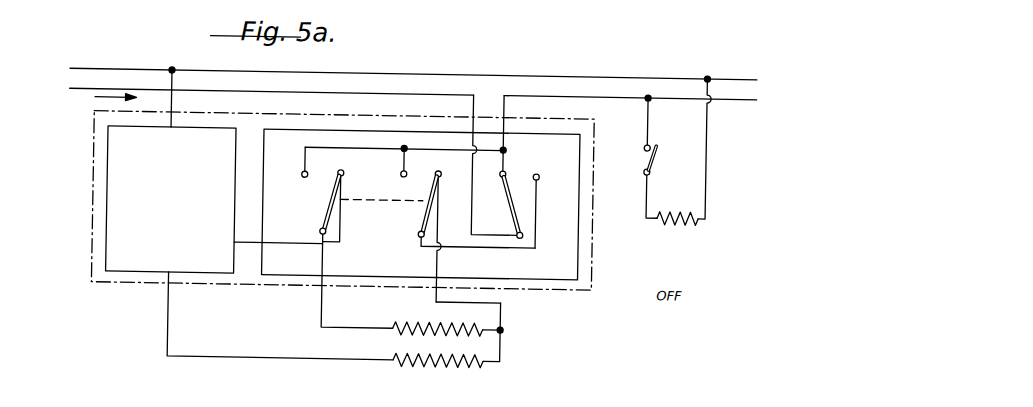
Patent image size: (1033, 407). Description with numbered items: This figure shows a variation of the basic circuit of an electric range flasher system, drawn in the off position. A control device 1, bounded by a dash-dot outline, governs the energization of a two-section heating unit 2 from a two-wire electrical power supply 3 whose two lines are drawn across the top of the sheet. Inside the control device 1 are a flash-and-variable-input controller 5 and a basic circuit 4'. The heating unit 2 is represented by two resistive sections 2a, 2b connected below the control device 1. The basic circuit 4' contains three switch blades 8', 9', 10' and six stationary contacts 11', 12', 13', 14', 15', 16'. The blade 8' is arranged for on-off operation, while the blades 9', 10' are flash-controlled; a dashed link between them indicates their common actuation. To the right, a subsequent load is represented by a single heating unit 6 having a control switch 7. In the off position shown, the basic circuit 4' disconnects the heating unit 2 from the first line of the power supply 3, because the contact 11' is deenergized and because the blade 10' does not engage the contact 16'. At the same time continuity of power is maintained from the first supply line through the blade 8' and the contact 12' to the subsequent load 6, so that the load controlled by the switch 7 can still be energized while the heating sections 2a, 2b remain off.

The control device 1 is at (95, 199).
The two-section heating unit 2 is at (461, 348).
The load resistor 2a is at (440, 321).
The load resistor 2b is at (440, 373).
The two-wire electrical power supply 3 is at (61, 55).
The basic circuit 4' is at (420, 216).
The flash-and-variable-input controller 5 is at (179, 153).
The heating unit 6 is at (677, 219).
The control switch 7 is at (660, 150).
The switch blade 8' is at (486, 207).
The switch blade 9' is at (461, 212).
The switch blade 10' is at (313, 204).
The stationary contact 11' is at (549, 202).
The stationary contact 12' is at (493, 166).
The stationary contact 13' is at (452, 229).
The stationary contact 14' is at (395, 167).
The stationary contact 15' is at (348, 200).
The stationary contact 16' is at (290, 169).